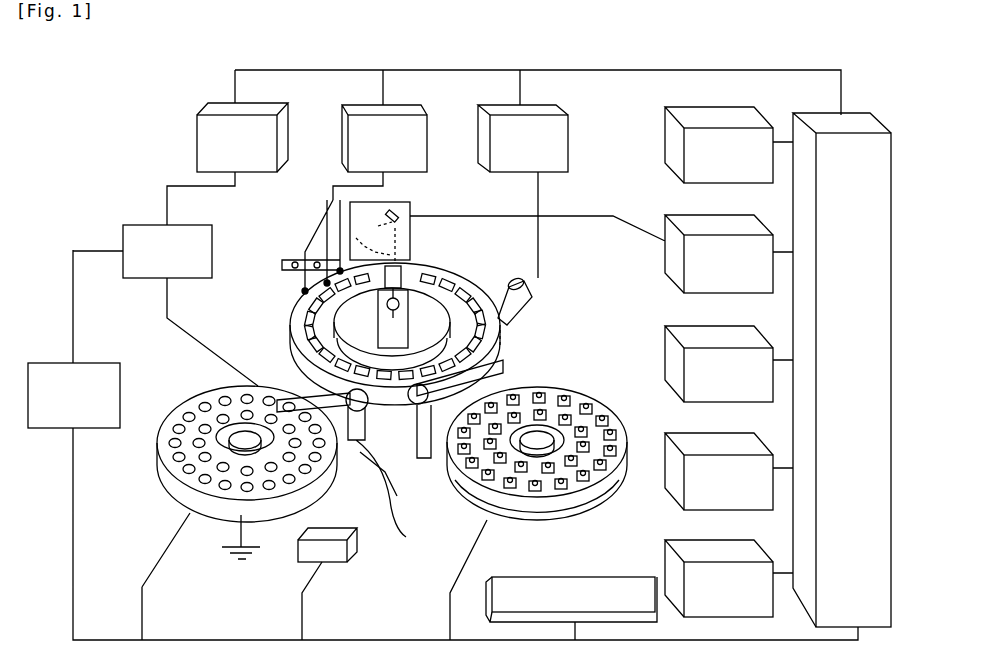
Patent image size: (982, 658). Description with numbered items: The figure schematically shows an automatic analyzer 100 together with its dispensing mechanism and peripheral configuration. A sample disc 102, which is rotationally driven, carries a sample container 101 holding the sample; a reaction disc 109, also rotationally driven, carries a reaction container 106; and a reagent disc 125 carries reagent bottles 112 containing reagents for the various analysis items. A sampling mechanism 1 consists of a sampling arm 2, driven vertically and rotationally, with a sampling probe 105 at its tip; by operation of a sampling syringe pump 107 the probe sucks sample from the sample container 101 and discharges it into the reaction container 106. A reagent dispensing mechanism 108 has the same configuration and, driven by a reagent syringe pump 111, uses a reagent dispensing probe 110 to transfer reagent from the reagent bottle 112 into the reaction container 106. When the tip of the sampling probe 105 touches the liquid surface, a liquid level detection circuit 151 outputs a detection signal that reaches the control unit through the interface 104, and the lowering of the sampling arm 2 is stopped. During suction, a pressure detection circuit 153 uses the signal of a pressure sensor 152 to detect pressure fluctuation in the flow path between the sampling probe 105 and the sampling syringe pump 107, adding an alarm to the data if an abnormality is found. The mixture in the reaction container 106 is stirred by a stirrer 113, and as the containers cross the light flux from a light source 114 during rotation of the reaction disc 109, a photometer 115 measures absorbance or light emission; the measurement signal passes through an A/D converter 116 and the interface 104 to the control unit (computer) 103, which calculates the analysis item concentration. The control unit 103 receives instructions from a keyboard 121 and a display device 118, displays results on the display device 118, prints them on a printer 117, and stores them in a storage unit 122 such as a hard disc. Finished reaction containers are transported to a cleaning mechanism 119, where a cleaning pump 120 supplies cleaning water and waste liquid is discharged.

The automatic analyzer 100 is at (97, 94).
The sampling syringe pump 107 is at (201, 113).
The cleaning pump 120 is at (421, 106).
The reagent syringe pump 111 is at (566, 110).
The interface 104 is at (841, 116).
The control unit (computer) 103 is at (666, 150).
The A/D converter 116 is at (662, 272).
The printer 117 is at (666, 333).
The display device 118 is at (673, 433).
The storage unit 122 is at (666, 540).
The pressure sensor 152 is at (146, 224).
The pressure detection circuit 153 is at (93, 429).
The photometer 115 is at (411, 207).
The cleaning mechanism 119 is at (292, 258).
The reaction container 106 is at (366, 313).
The reaction disc 109 is at (438, 263).
The light source 114 is at (403, 340).
The stirrer 113 is at (540, 273).
The sampling probe 105 is at (358, 469).
The sampling mechanism 1 is at (380, 440).
The sampling arm 2 is at (384, 482).
The reagent dispensing mechanism 108 is at (424, 460).
The sample container 101 is at (234, 481).
The sample disc 102 is at (207, 517).
The reagent dispensing probe 110 is at (537, 453).
The reagent bottle 112 is at (567, 392).
The reagent disc 125 is at (590, 516).
The liquid level detection circuit 151 is at (355, 563).
The keyboard 121 is at (517, 585).